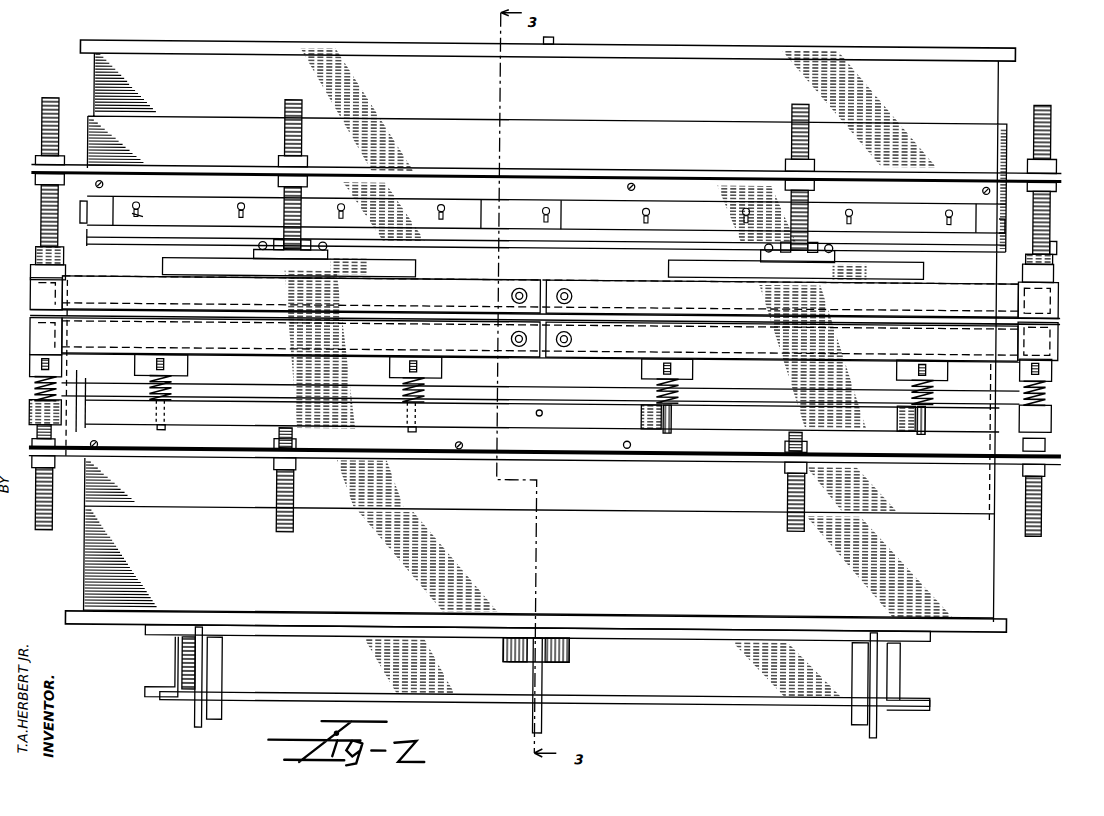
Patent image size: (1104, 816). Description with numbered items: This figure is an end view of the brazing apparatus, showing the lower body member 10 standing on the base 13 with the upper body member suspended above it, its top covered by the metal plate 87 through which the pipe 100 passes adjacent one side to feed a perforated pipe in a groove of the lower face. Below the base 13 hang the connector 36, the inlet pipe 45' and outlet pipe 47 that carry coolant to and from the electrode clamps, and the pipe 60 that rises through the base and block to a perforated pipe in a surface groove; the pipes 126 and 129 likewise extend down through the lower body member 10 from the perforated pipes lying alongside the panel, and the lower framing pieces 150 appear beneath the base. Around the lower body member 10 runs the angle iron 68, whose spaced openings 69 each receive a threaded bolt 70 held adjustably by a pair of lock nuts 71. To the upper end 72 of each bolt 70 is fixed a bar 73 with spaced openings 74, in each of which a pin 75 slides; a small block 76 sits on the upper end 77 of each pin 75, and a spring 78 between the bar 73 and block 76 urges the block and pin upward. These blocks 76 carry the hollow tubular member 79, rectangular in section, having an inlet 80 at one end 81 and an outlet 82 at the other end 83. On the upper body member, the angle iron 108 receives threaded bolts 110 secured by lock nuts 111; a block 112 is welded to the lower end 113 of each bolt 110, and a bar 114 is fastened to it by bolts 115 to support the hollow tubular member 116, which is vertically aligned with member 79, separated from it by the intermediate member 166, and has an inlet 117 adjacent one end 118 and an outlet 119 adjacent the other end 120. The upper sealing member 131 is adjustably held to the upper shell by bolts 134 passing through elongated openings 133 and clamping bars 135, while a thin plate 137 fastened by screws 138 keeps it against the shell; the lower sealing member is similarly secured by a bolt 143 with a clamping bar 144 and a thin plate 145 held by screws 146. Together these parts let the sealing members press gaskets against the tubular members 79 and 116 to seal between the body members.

The lower body member 10 is at (1006, 574).
The base 13 is at (953, 630).
The connector 36 is at (506, 658).
The inlet pipe 45' is at (231, 679).
The outlet pipe 47 is at (855, 718).
The pipe 60 is at (536, 718).
The angle iron 68 is at (913, 510).
The openings 69 is at (275, 464).
The threaded bolt 70 is at (295, 526).
The lock nuts 71 is at (33, 448).
The upper end 72 is at (38, 432).
The bar 73 is at (30, 414).
The openings 74 is at (918, 415).
The pin 75 is at (168, 416).
The small block 76 is at (30, 363).
The upper end 77 is at (42, 371).
The spring 78 is at (35, 398).
The hollow tubular member 79 is at (30, 342).
The inlet 80 is at (511, 340).
The end 81 is at (533, 351).
The outlet 82 is at (572, 340).
The end 83 is at (551, 351).
The metal plate 87 is at (184, 44).
The pipe 100 is at (551, 38).
The angle iron 108 is at (175, 120).
The threaded bolt 110 is at (40, 112).
The lock nuts 111 is at (306, 163).
The block 112 is at (35, 257).
The lower end 113 is at (51, 253).
The bar 114 is at (30, 274).
The bolts 115 is at (40, 248).
The hollow tubular member 116 is at (30, 295).
The inlet 117 is at (572, 298).
The end 118 is at (552, 284).
The outlet 119 is at (511, 298).
The end 120 is at (527, 280).
The pipe 126 is at (198, 727).
The pipe 129 is at (880, 722).
The sealing member 131 is at (83, 255).
The elongated openings 133 is at (140, 220).
The bolts 134 is at (139, 209).
The clamping bars 135 is at (174, 200).
The thin plate 137 is at (100, 243).
The screws 138 is at (102, 189).
The bolt 143 is at (67, 423).
The clamping bar 144 is at (77, 379).
The thin plate 145 is at (90, 392).
The screws 146 is at (99, 447).
The bottom bracket 150 is at (307, 704).
The spacer bar 166 is at (1055, 316).